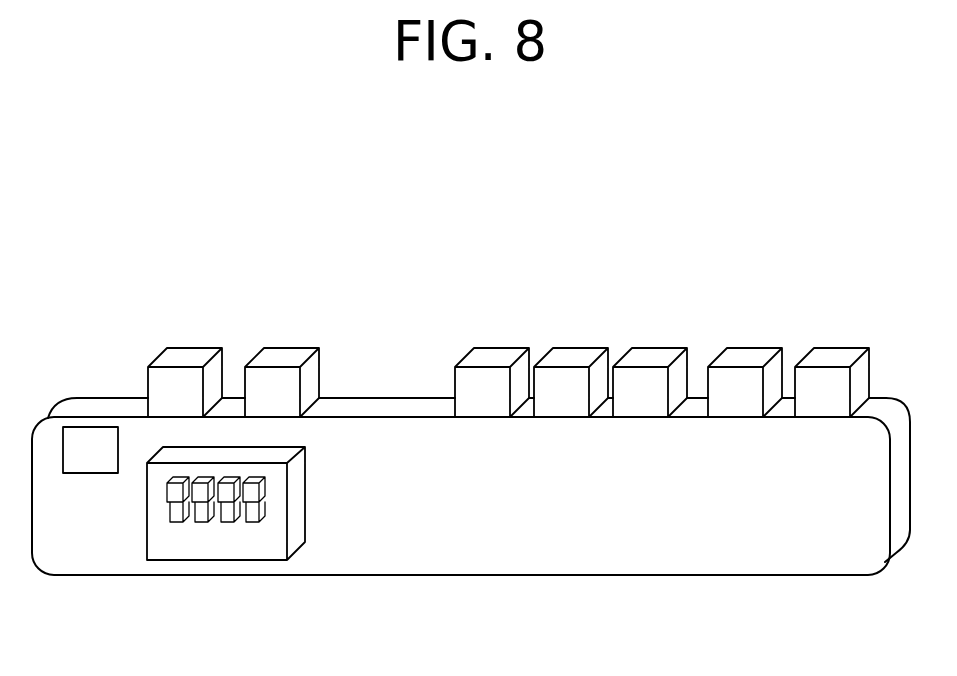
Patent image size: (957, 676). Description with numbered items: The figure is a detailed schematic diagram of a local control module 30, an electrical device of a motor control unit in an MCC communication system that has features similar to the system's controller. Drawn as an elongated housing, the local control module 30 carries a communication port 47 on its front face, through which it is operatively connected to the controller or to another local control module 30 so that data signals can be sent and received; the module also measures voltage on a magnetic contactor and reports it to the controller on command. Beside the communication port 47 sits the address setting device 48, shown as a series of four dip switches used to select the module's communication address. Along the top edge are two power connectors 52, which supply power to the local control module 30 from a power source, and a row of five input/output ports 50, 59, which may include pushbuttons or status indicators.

The local control module 30 is at (357, 278).
The communication port 47 is at (58, 441).
The address setting device 48 is at (245, 562).
The power connectors 52 is at (343, 340).
The input/output port 50 is at (664, 347).
The input/output port 59 is at (873, 340).